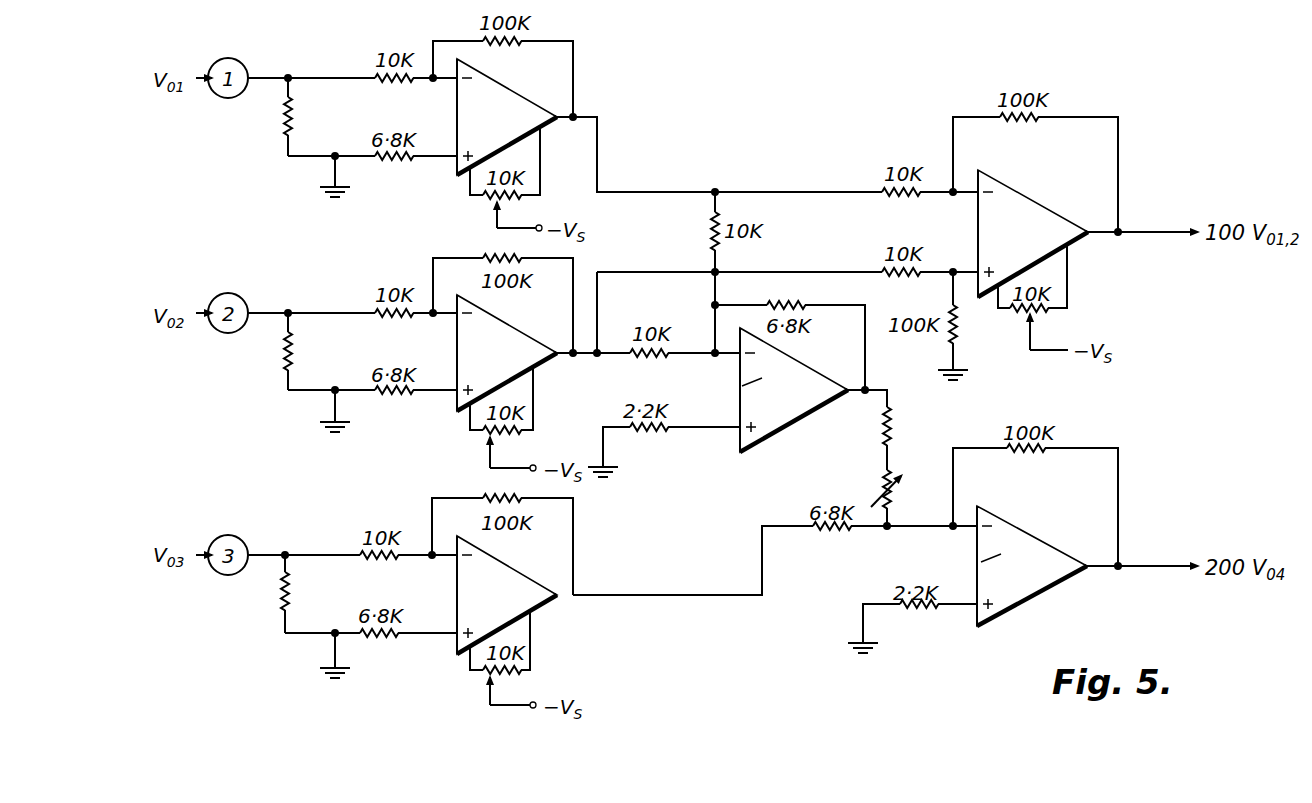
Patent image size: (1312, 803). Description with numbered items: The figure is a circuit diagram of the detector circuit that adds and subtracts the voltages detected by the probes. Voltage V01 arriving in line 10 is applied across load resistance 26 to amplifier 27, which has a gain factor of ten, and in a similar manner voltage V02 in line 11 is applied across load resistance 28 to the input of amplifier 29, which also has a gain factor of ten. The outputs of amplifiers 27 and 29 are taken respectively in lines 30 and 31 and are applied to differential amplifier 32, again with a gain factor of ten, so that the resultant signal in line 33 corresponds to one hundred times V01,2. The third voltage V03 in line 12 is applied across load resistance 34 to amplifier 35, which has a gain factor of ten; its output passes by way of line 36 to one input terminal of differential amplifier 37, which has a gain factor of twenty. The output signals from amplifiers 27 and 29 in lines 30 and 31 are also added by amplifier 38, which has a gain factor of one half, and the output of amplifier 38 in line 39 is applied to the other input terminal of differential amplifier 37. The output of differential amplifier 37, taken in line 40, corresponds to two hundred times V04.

The line 10 is at (276, 70).
The line 11 is at (277, 308).
The line 12 is at (273, 553).
The load resistance 26 is at (283, 118).
The amplifier 27 is at (516, 92).
The load resistance 28 is at (283, 355).
The amplifier 29 is at (507, 326).
The line 30 is at (785, 191).
The line 31 is at (782, 270).
The differential amplifier 32 is at (1045, 208).
The line 33 is at (1148, 231).
The load resistance 34 is at (280, 596).
The amplifier 35 is at (515, 569).
The line 36 is at (651, 594).
The differential amplifier 37 is at (1040, 546).
The amplifier 38 is at (795, 361).
The line 39 is at (889, 400).
The line 40 is at (1143, 566).